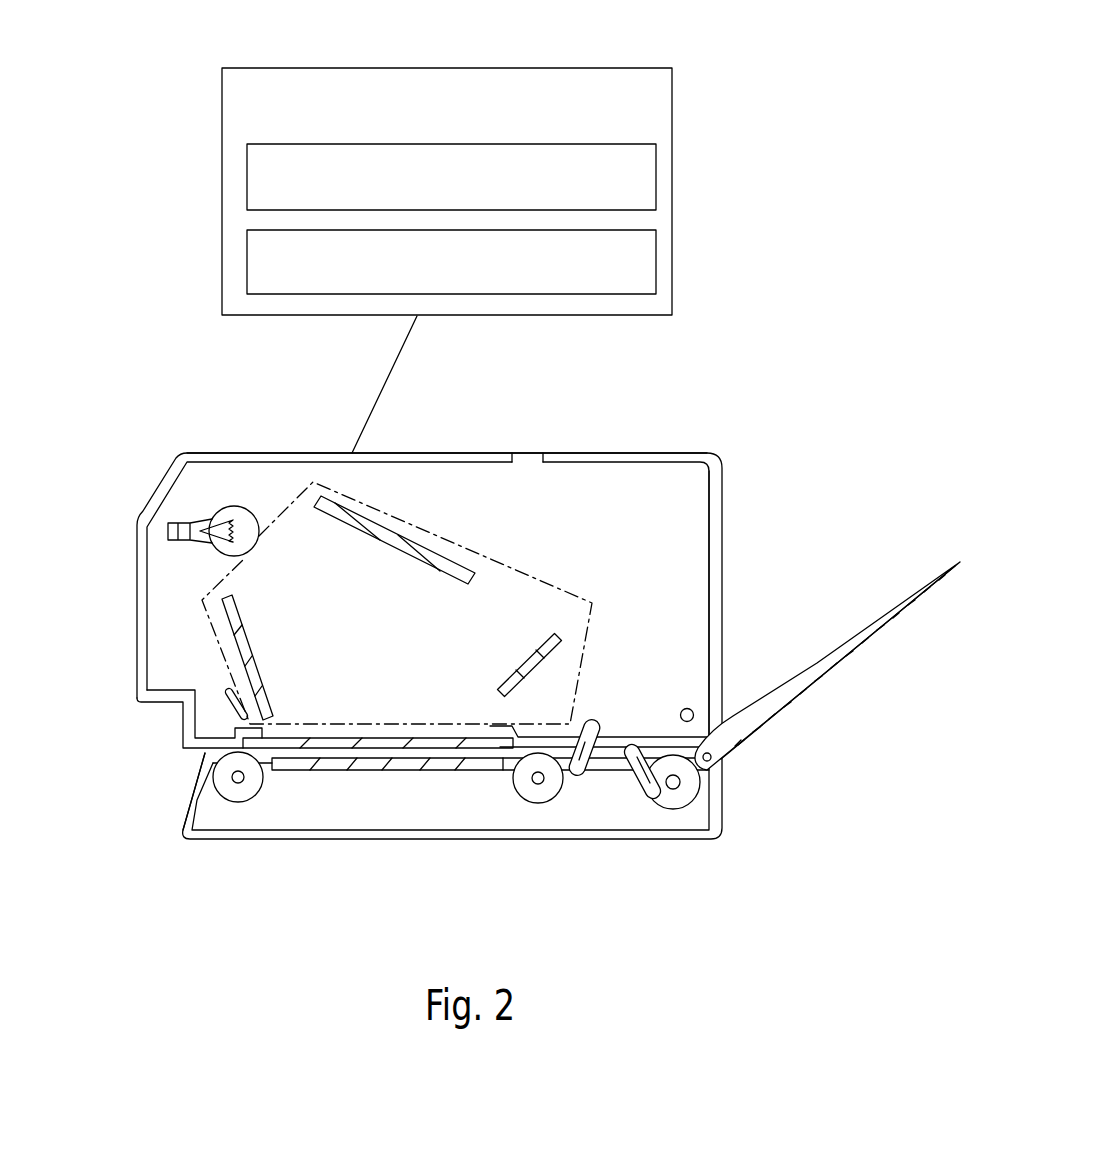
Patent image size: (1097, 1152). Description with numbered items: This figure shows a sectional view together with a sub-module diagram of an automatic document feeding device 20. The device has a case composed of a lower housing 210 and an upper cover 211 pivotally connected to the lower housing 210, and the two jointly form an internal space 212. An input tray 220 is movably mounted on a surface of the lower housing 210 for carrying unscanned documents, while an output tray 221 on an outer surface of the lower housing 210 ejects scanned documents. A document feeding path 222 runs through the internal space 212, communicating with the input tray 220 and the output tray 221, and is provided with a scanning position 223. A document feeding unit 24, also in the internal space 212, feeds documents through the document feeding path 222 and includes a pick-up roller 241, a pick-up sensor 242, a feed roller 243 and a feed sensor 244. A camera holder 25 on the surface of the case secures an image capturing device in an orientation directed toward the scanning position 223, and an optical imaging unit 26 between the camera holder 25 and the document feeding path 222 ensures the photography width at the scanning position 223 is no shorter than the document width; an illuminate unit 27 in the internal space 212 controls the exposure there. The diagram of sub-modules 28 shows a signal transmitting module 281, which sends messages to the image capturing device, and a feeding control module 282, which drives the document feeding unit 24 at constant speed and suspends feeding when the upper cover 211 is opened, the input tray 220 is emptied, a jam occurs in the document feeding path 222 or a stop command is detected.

The automatic document feeding device 20 is at (104, 424).
The camera holder 25 is at (283, 458).
The optical imaging unit 26 is at (490, 556).
The illuminate unit 27 is at (188, 523).
The sub-modules 28 is at (390, 68).
The signal transmitting module 281 is at (641, 184).
The feeding control module 282 is at (641, 264).
The lower housing 210 is at (195, 805).
The upper cover 211 is at (140, 592).
The internal space 212 is at (652, 543).
The input tray 220 is at (852, 647).
The output tray 221 is at (205, 755).
The document feeding path 222 is at (608, 753).
The scanning position 223 is at (325, 752).
The document feeding unit 24 is at (485, 839).
The pick-up roller 241 is at (693, 792).
The pick-up sensor 242 is at (649, 822).
The feed roller 243 is at (247, 785).
The feed sensor 244 is at (598, 758).